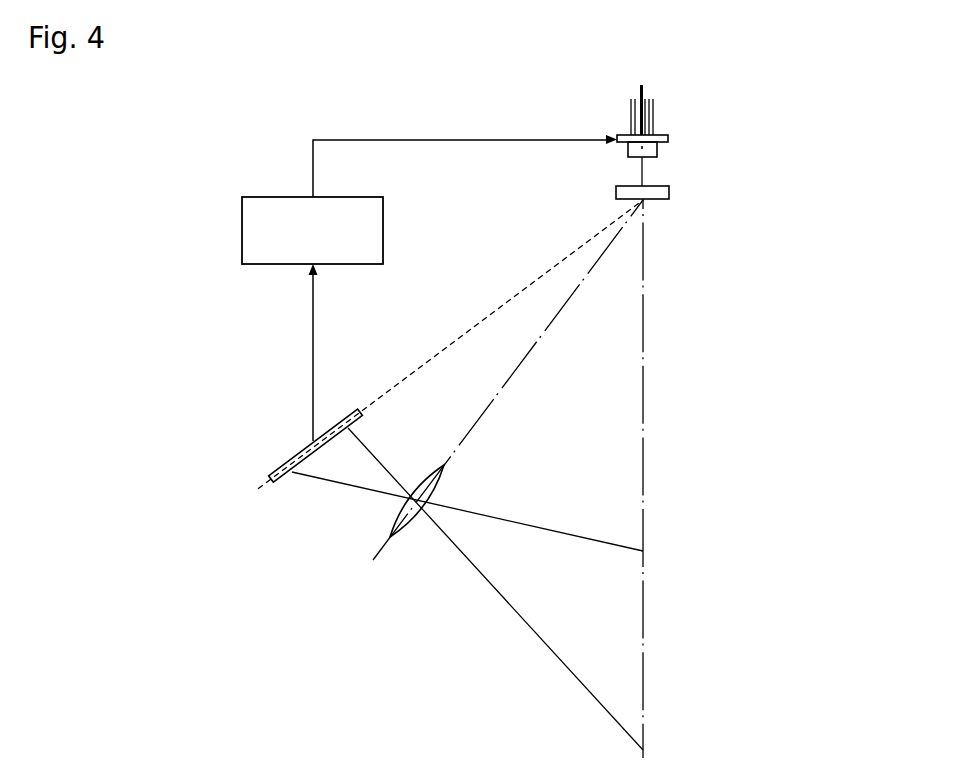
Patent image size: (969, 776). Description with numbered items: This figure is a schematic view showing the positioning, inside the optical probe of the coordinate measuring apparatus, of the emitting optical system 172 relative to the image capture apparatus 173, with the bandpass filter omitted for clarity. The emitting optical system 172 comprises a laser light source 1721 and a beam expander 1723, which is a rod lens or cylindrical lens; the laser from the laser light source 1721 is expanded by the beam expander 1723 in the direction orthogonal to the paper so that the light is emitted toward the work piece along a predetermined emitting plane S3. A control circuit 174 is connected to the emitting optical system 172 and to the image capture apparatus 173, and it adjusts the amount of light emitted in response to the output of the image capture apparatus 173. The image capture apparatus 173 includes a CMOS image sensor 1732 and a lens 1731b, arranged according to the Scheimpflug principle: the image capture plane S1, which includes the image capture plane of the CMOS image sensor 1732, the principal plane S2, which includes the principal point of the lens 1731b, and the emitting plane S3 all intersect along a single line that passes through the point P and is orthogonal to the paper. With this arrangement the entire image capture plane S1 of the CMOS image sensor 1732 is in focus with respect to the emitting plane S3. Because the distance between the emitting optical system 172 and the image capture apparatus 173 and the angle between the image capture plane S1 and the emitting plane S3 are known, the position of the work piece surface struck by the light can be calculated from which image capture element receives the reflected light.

The emitting optical system 172 is at (714, 142).
The laser light source 1721 is at (668, 139).
The beam expander 1723 is at (669, 192).
The point P is at (650, 200).
The control circuit 174 is at (242, 234).
The image capture apparatus 173 is at (402, 579).
The CMOS image sensor 1732 is at (273, 470).
The lens 1731b is at (396, 514).
The image capture plane S1 is at (453, 341).
The principal plane S2 is at (495, 397).
The emitting plane S3 is at (643, 386).